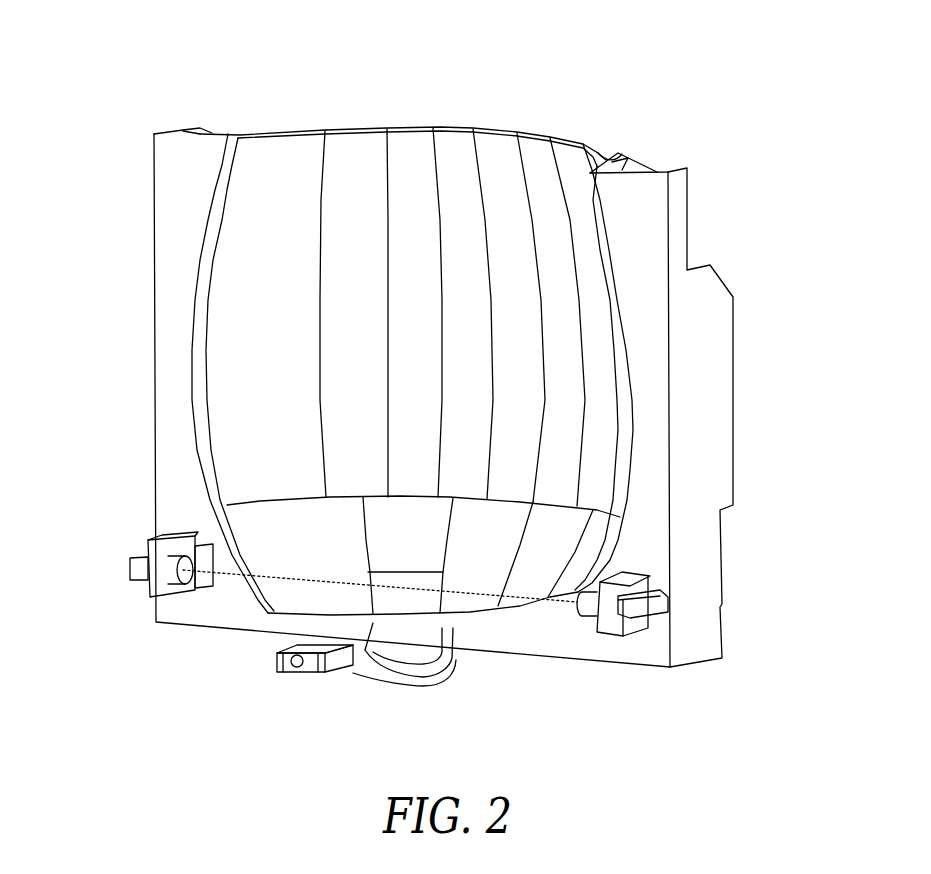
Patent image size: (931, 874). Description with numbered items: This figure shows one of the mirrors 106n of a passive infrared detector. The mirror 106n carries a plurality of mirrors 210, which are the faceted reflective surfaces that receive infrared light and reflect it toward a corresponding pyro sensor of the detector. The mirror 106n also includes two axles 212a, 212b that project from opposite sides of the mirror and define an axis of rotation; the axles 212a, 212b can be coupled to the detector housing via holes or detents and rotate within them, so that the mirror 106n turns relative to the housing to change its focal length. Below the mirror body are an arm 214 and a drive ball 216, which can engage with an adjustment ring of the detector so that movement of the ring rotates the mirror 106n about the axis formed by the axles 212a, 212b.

The mirror 106n is at (595, 148).
The plurality of mirrors 210 is at (413, 155).
The axle 212a is at (172, 562).
The axle 212b is at (607, 605).
The arm 214 is at (417, 673).
The drive ball 216 is at (297, 667).